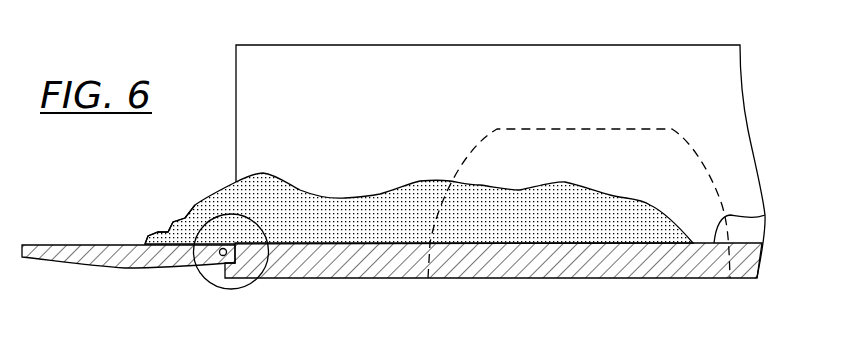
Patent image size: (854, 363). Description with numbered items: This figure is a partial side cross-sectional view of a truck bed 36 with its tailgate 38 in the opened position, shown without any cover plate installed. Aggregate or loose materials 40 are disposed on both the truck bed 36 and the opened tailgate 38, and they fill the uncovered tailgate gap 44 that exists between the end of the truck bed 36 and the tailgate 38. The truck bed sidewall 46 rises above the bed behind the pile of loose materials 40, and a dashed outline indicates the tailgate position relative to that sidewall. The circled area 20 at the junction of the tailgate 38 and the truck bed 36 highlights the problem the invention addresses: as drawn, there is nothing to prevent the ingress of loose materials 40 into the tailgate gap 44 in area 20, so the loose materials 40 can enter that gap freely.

The truck bed sidewall 46 is at (360, 45).
The loose materials 40 is at (234, 189).
The tailgate gap 44 is at (200, 217).
The tailgate 38 is at (100, 245).
The area 20 is at (248, 289).
The truck bed 36 is at (765, 215).